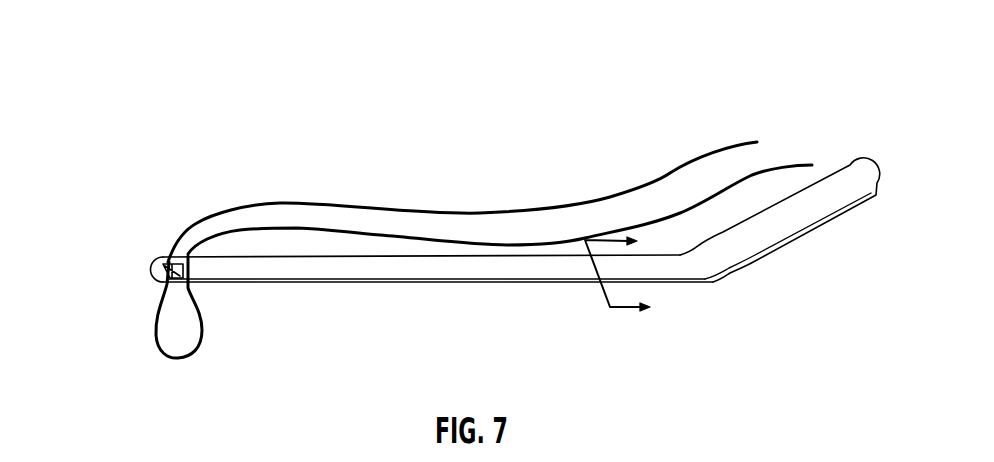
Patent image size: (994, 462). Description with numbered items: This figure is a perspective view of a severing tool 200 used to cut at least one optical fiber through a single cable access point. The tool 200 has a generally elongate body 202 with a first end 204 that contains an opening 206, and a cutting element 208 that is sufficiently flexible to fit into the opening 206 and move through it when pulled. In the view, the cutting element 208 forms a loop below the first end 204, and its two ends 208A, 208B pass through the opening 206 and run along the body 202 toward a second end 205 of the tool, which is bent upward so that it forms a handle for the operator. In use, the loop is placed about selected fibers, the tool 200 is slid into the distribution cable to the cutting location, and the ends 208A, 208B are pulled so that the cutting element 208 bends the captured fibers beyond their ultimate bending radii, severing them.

The severing tool 200 is at (403, 142).
The elongate body 202 is at (392, 278).
The first end 204 is at (223, 290).
The second end 205 is at (667, 270).
The opening 206 is at (153, 283).
The cutting element 208 is at (187, 357).
The end of cutting element 208A is at (737, 142).
The end of cutting element 208B is at (787, 165).